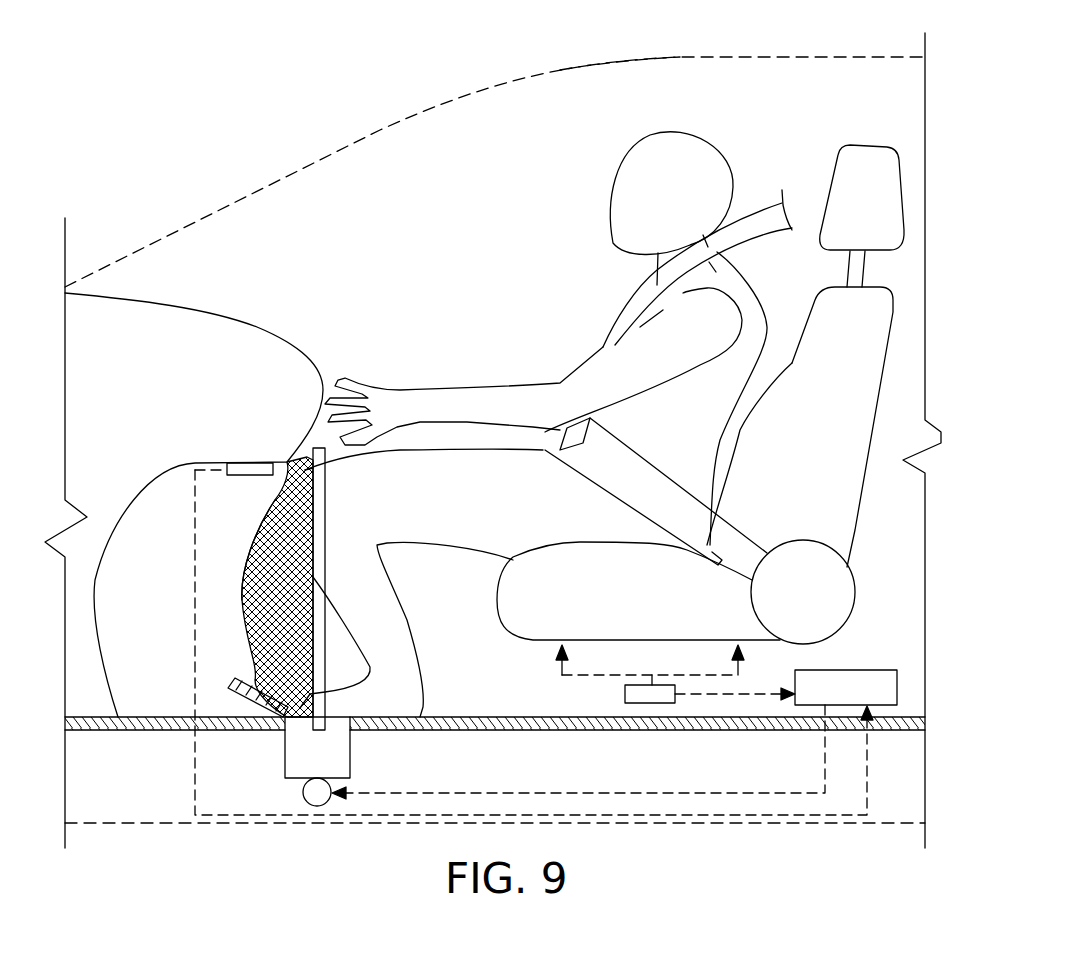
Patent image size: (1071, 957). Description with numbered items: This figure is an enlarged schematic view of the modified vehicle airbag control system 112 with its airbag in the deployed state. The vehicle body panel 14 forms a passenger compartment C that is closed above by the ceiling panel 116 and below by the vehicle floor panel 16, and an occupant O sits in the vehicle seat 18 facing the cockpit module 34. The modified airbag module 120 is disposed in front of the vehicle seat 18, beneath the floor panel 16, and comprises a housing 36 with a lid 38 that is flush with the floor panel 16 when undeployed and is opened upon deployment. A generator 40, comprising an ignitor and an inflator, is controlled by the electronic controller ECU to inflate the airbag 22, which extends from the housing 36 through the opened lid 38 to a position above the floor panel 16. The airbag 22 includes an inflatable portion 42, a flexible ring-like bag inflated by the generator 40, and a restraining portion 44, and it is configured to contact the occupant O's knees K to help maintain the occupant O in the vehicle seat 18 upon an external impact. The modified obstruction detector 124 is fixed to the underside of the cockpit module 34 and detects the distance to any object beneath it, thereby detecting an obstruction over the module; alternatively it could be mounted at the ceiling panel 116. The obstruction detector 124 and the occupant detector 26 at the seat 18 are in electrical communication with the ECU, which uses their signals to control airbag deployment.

The body panel 14 is at (593, 55).
The ceiling panel 116 is at (681, 58).
The modified vehicle airbag control system 112 is at (221, 116).
The passenger compartment C is at (428, 190).
The occupant O is at (720, 147).
The vehicle seat 18 is at (900, 172).
The cockpit module 34 is at (228, 310).
The modified obstruction detector 124 is at (250, 463).
The inflatable airbag 22 is at (290, 466).
The knees K is at (262, 513).
The restraining portion 44 is at (233, 600).
The inflatable portion 42 is at (326, 487).
The lid 38 is at (233, 684).
The vehicle floor panel 16 is at (470, 716).
The housing 36 is at (350, 753).
The generator 40 is at (303, 791).
The modified airbag module 120 is at (177, 778).
The occupant detector 26 is at (625, 691).
The electronic controller ECU is at (846, 687).